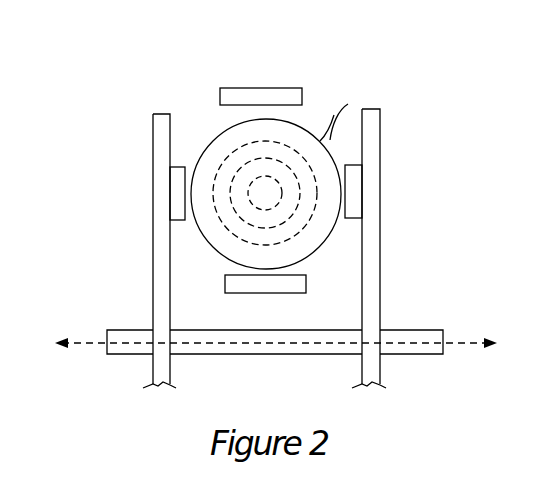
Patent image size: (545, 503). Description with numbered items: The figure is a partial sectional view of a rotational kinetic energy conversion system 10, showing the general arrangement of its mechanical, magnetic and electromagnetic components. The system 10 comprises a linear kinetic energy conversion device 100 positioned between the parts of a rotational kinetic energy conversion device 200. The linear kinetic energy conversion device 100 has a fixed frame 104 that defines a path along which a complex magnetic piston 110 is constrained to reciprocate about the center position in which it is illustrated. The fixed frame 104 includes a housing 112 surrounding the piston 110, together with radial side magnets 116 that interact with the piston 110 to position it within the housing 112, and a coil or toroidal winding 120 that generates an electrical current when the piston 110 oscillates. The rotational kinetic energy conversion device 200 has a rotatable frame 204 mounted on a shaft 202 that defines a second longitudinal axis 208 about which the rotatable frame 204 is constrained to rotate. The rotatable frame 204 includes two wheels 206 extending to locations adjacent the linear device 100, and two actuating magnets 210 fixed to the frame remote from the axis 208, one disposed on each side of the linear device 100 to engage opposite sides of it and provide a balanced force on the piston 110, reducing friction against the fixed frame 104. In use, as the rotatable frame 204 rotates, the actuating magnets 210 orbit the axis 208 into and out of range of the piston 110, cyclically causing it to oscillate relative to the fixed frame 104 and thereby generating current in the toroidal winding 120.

The rotational kinetic energy conversion system 10 is at (414, 129).
The linear kinetic energy conversion device 100 is at (214, 127).
The fixed frame 104 is at (334, 115).
The complex magnetic piston 110 is at (226, 138).
The housing 112 is at (348, 104).
The radial side magnets 116 is at (278, 88).
The toroidal winding 120 is at (257, 155).
The rotational kinetic energy conversion device 200 is at (146, 292).
The shaft 202 is at (410, 354).
The rotatable frame 204 is at (154, 237).
The wheels 206 is at (154, 317).
The second longitudinal axis 208 is at (92, 343).
The actuating magnets 210 is at (176, 181).